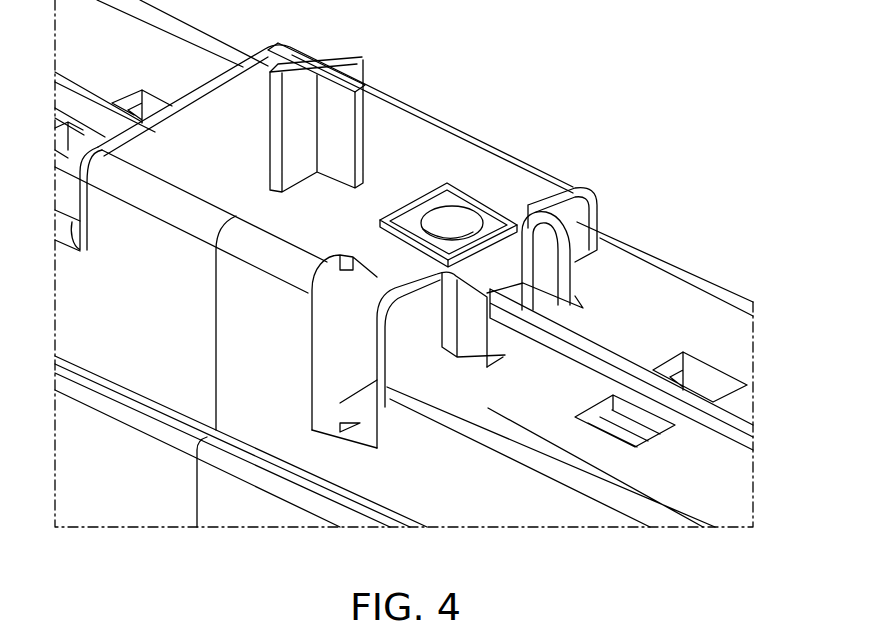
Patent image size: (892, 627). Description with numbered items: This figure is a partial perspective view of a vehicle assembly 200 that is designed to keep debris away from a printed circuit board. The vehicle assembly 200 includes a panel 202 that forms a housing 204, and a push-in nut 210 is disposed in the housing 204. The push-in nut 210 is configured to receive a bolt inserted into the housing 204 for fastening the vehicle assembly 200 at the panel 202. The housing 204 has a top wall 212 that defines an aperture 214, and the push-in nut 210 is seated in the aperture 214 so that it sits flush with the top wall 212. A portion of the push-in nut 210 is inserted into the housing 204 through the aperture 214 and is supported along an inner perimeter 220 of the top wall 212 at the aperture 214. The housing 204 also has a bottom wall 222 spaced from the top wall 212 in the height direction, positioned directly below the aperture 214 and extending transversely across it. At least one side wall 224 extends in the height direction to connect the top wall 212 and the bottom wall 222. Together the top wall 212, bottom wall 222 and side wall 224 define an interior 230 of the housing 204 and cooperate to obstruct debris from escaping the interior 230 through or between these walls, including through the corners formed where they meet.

The vehicle assembly 200 is at (567, 97).
The panel 202 is at (665, 315).
The housing 204 is at (487, 200).
The push-in nut 210 is at (557, 205).
The top wall 212 is at (390, 253).
The aperture 214 is at (445, 192).
The inner perimeter 220 is at (520, 184).
The bottom wall 222 is at (362, 357).
The side wall 224 is at (415, 383).
The interior 230 is at (462, 377).